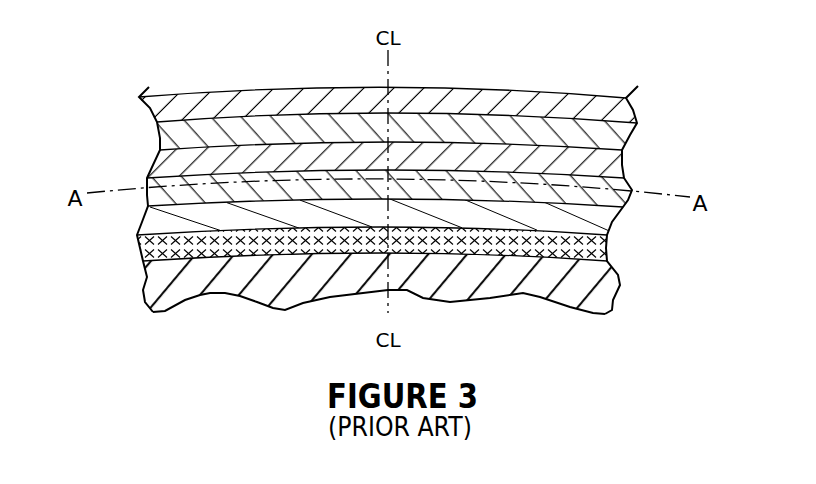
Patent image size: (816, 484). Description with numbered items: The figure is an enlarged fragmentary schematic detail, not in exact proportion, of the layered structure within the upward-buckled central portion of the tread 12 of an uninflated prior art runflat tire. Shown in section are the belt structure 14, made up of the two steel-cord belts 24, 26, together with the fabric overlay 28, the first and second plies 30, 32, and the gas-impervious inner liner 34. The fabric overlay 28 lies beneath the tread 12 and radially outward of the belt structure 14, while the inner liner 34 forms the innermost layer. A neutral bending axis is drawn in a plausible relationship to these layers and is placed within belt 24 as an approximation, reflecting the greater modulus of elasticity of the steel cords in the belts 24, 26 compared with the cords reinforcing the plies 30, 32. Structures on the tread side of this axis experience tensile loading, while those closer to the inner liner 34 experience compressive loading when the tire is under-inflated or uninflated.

The tread 12 is at (228, 282).
The belt structure 14 is at (532, 210).
The belt 24 is at (493, 220).
The belt 26 is at (445, 185).
The fabric overlay 28 is at (492, 238).
The first ply 30 is at (268, 135).
The second ply 32 is at (332, 167).
The inner liner 34 is at (215, 100).